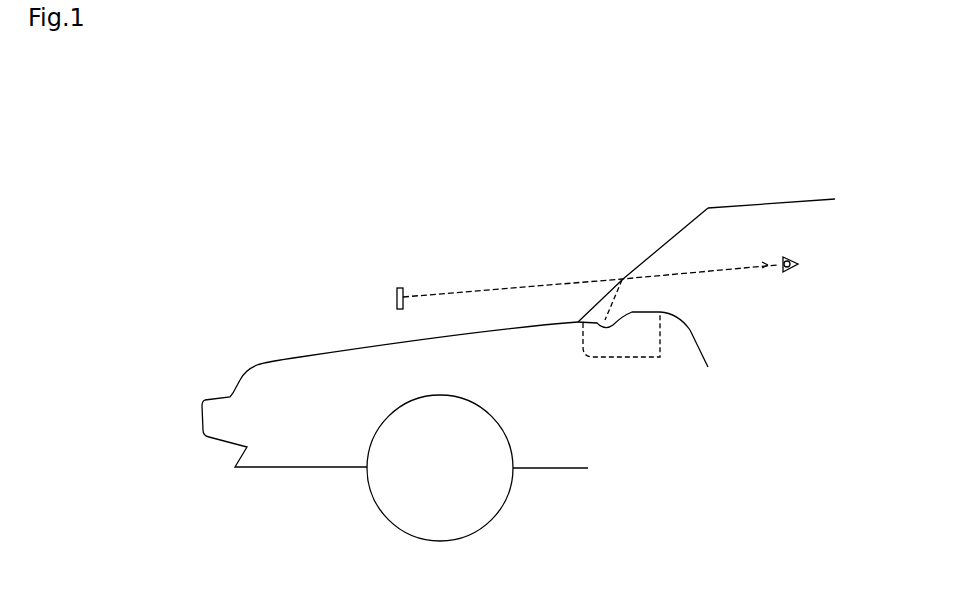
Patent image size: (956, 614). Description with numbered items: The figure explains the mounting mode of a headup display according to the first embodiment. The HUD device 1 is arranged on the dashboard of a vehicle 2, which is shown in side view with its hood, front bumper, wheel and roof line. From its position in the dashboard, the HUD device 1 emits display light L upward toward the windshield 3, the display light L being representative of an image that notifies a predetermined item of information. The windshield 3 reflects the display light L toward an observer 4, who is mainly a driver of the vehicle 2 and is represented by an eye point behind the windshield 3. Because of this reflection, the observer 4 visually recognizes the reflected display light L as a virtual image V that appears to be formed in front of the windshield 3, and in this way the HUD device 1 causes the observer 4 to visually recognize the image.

The HUD device 1 is at (632, 358).
The vehicle 2 is at (775, 188).
The windshield 3 is at (650, 257).
The observer 4 is at (796, 259).
The virtual image V is at (400, 288).
The display light L is at (618, 297).